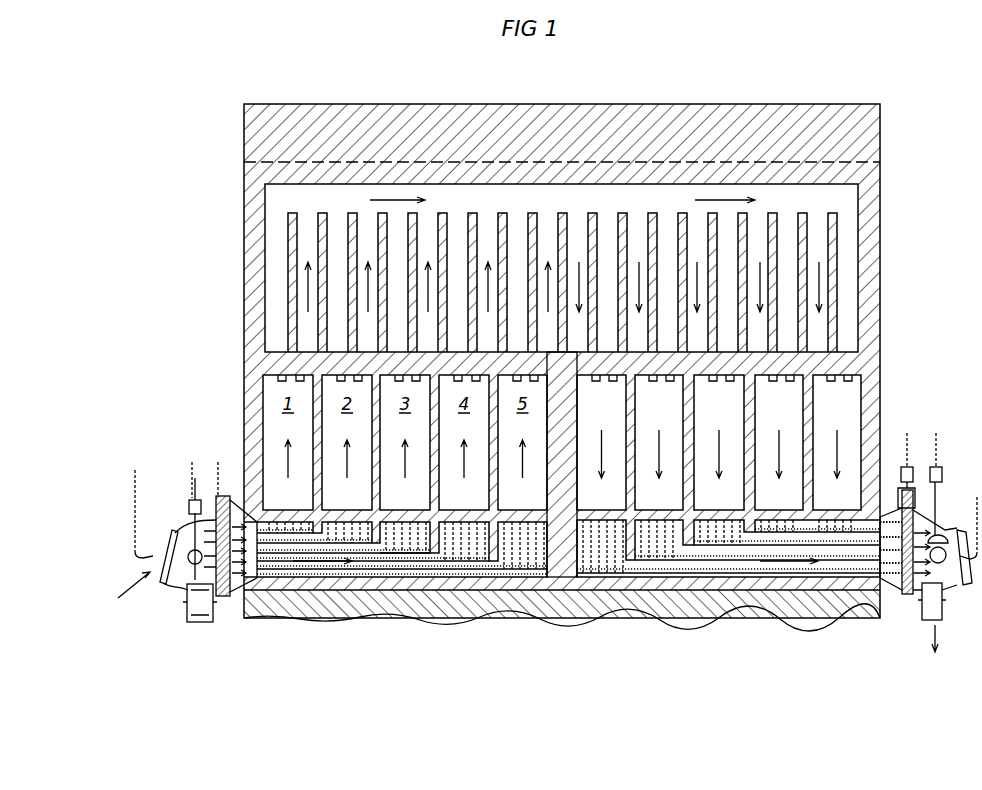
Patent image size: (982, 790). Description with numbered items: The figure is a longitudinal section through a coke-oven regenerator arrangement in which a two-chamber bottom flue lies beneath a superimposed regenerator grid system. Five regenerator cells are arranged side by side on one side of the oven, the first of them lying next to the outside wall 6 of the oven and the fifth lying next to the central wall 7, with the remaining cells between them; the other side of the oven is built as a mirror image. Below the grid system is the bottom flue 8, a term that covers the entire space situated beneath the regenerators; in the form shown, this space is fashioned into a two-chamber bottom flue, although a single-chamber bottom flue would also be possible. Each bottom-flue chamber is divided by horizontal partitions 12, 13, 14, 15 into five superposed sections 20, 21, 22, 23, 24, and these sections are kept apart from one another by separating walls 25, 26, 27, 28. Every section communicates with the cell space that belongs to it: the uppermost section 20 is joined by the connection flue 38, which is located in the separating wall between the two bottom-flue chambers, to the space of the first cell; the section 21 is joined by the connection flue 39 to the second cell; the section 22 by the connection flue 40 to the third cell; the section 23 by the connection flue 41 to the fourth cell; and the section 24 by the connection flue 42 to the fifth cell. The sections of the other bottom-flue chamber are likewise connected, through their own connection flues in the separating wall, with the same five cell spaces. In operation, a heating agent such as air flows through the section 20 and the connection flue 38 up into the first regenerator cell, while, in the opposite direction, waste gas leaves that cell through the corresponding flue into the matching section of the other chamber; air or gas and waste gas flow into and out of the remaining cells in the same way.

The outside wall 6 is at (244, 293).
The central wall 7 is at (568, 412).
The bottom flue 8 is at (255, 522).
The horizontal partition 12 is at (257, 606).
The horizontal partition 13 is at (268, 530).
The horizontal partition 14 is at (367, 558).
The horizontal partition 15 is at (417, 566).
The uppermost section 20 is at (289, 528).
The section 21 is at (302, 540).
The section 22 is at (384, 550).
The section 23 is at (437, 562).
The section 24 is at (483, 574).
The separating wall 25 is at (320, 528).
The separating wall 26 is at (383, 528).
The separating wall 27 is at (444, 528).
The separating wall 28 is at (503, 528).
The connection flue 38 is at (300, 522).
The connection flue 39 is at (357, 522).
The connection flue 40 is at (417, 522).
The connection flue 41 is at (477, 522).
The connection flue 42 is at (532, 522).